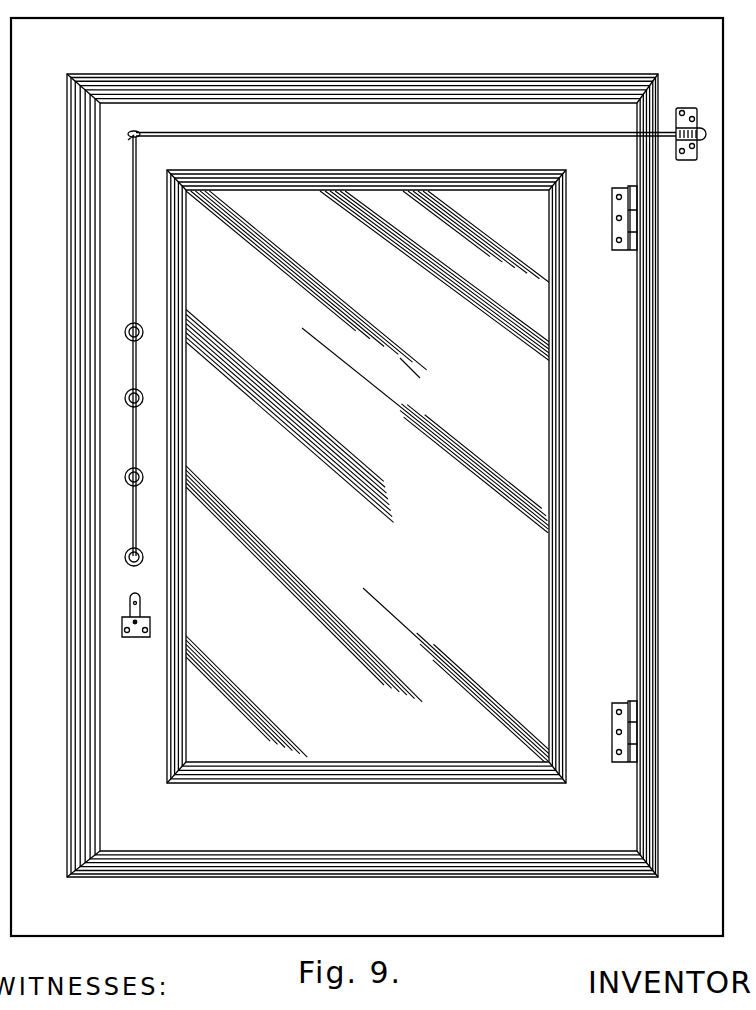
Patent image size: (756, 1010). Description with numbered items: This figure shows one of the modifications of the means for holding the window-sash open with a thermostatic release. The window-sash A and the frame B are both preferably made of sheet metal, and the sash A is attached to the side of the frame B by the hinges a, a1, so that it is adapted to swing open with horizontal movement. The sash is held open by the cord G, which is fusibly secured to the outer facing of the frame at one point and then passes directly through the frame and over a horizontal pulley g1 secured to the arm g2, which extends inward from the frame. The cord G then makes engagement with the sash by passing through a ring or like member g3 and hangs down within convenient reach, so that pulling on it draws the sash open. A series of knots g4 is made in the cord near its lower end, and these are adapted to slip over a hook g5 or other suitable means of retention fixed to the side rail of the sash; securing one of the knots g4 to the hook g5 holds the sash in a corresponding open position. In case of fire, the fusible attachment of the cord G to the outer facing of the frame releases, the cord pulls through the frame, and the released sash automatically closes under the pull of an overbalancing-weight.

The window-sash A is at (362, 475).
The frame B is at (367, 477).
The cord G is at (404, 333).
The horizontal pulley g1 is at (676, 160).
The arm g2 is at (694, 108).
The ring g3 is at (131, 123).
The knots g4 is at (142, 439).
The hook g5 is at (128, 612).
The hinge a is at (624, 230).
The hinge a1 is at (617, 745).